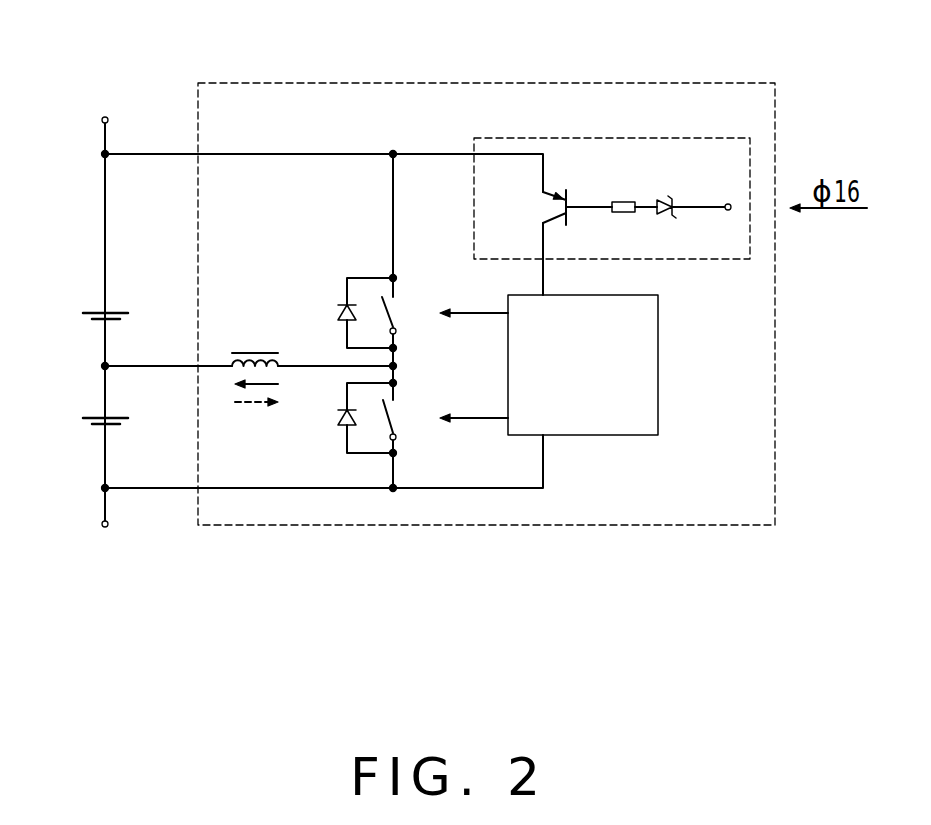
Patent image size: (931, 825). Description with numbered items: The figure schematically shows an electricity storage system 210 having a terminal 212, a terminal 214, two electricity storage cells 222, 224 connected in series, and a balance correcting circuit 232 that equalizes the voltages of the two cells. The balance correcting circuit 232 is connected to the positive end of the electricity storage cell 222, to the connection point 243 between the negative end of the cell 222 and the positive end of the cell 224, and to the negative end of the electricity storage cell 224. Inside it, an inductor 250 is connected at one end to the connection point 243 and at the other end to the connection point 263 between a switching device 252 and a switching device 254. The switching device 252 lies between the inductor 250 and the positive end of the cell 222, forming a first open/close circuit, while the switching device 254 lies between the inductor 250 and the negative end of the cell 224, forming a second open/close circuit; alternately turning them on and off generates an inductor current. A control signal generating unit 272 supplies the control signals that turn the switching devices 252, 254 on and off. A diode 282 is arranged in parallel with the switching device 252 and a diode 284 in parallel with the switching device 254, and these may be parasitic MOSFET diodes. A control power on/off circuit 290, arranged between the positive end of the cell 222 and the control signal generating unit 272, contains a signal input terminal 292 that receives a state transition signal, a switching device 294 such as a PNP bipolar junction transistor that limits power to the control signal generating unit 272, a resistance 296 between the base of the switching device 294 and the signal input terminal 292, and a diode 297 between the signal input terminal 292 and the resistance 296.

The electricity storage system 210 is at (84, 51).
The terminal 212 is at (128, 102).
The terminal 214 is at (107, 527).
The electricity storage cell 222 is at (88, 322).
The electricity storage cell 224 is at (88, 428).
The balance correcting circuit 232 is at (703, 83).
The connection point 243 is at (110, 363).
The inductor 250 is at (256, 350).
The switching device 252 is at (397, 307).
The switching device 254 is at (398, 413).
The connection point 263 is at (398, 367).
The control signal generating unit 272 is at (590, 437).
The diode 282 is at (336, 306).
The diode 284 is at (338, 418).
The control power on/off circuit 290 is at (680, 260).
The signal input terminal 292 is at (728, 204).
The switching device 294 is at (551, 209).
The resistance 296 is at (618, 213).
The diode 297 is at (667, 213).